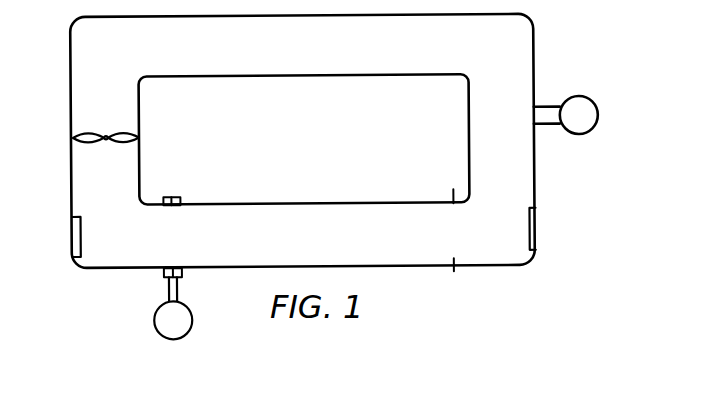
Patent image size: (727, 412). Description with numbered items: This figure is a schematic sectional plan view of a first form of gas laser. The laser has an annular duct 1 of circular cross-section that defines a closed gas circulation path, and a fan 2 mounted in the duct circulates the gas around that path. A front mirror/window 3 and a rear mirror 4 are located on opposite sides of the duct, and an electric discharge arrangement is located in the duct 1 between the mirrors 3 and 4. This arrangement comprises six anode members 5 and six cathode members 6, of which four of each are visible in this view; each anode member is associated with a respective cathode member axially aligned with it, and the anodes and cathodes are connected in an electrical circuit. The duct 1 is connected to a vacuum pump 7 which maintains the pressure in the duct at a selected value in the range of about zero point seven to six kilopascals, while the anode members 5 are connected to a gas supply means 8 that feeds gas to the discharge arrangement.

The duct 1 is at (527, 36).
The fan 2 is at (90, 145).
The front mirror/window 3 is at (71, 247).
The rear mirror 4 is at (536, 232).
The anode members 5 is at (175, 228).
The cathode members 6 is at (456, 212).
The vacuum pump 7 is at (577, 131).
The gas supply means 8 is at (189, 327).